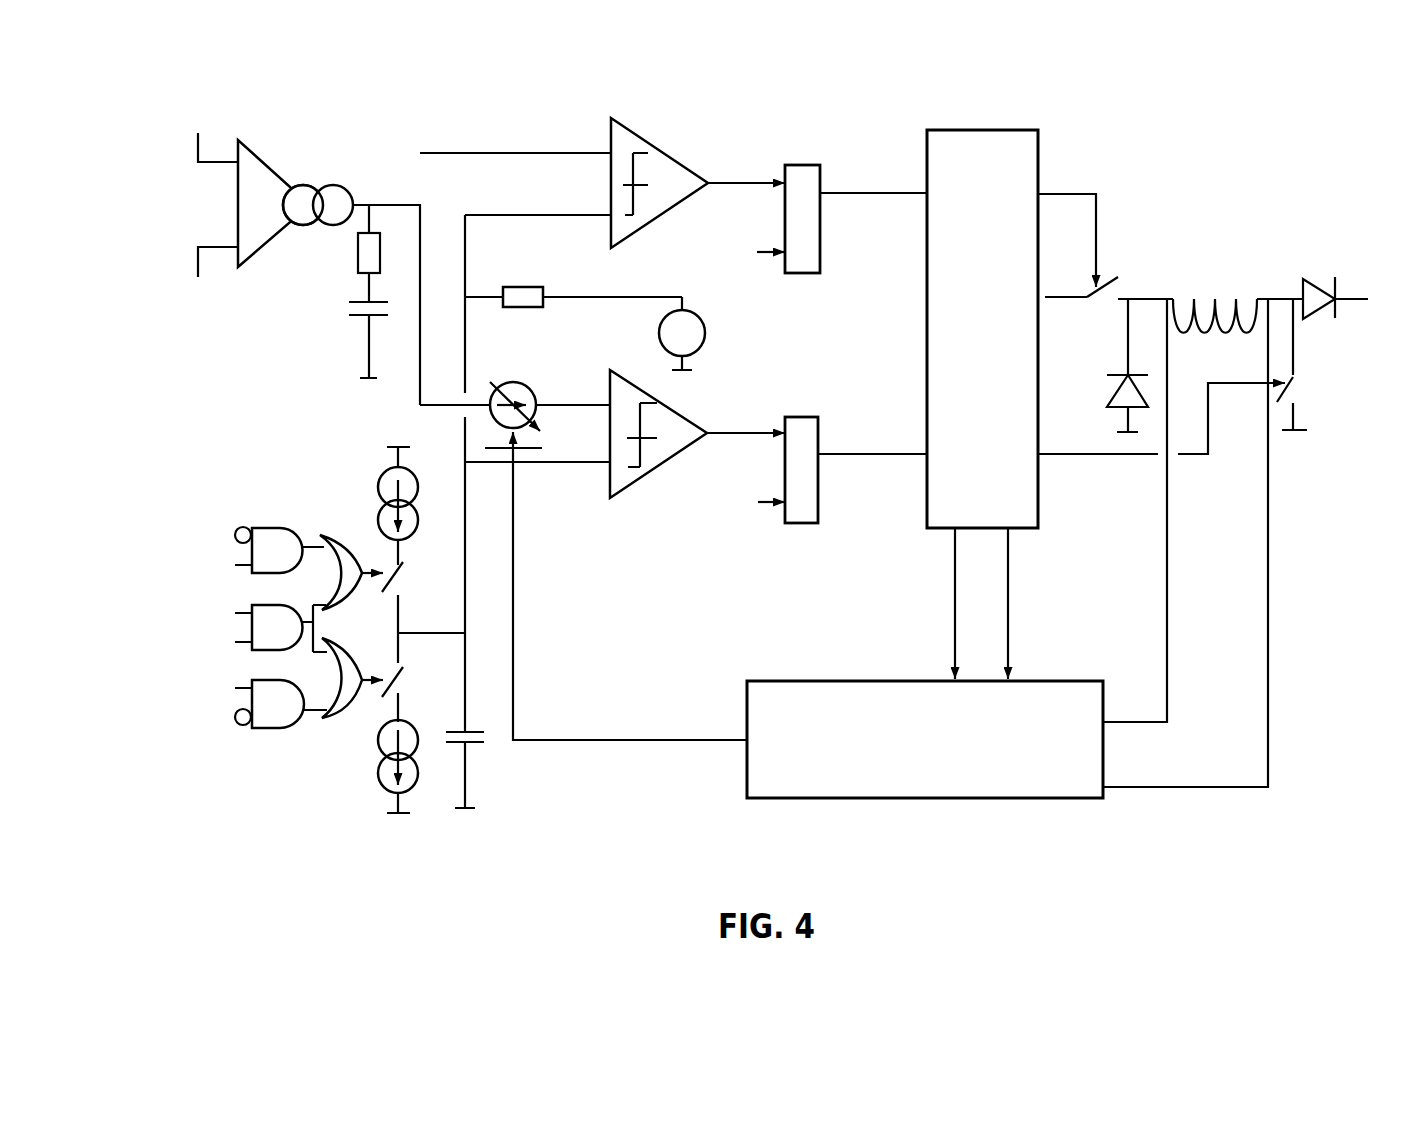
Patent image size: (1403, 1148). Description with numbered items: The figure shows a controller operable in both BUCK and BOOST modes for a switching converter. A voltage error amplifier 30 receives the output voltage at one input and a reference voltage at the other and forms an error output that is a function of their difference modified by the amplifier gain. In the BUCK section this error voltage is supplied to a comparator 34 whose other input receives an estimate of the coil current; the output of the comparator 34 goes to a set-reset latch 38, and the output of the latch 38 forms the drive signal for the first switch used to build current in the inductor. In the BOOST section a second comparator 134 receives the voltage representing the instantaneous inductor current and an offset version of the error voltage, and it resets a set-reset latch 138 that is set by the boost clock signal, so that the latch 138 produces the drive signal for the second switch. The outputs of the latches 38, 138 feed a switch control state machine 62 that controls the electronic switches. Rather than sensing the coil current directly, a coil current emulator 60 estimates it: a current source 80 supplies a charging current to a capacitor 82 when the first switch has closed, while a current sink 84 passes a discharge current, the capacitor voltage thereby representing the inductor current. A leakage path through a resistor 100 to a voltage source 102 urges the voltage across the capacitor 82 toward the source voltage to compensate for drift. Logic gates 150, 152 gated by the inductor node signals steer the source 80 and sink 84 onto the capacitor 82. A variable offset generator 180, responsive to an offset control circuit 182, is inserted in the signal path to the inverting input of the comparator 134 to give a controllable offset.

The voltage error amplifier 30 is at (277, 160).
The comparator 34 is at (658, 143).
The set-reset latch 38 is at (820, 218).
The coil current emulator 60 is at (163, 778).
The switch control state machine 62 is at (1038, 157).
The current source 80 is at (382, 472).
The capacitor 82 is at (484, 737).
The current sink 84 is at (380, 787).
The resistor 100 is at (548, 290).
The voltage source 102 is at (706, 330).
The second comparator 134 is at (677, 410).
The set-reset latch 138 is at (818, 475).
The OR gate 150 is at (343, 537).
The OR gate 152 is at (328, 722).
The variable offset generator 180 is at (518, 380).
The offset control circuit 182 is at (865, 680).